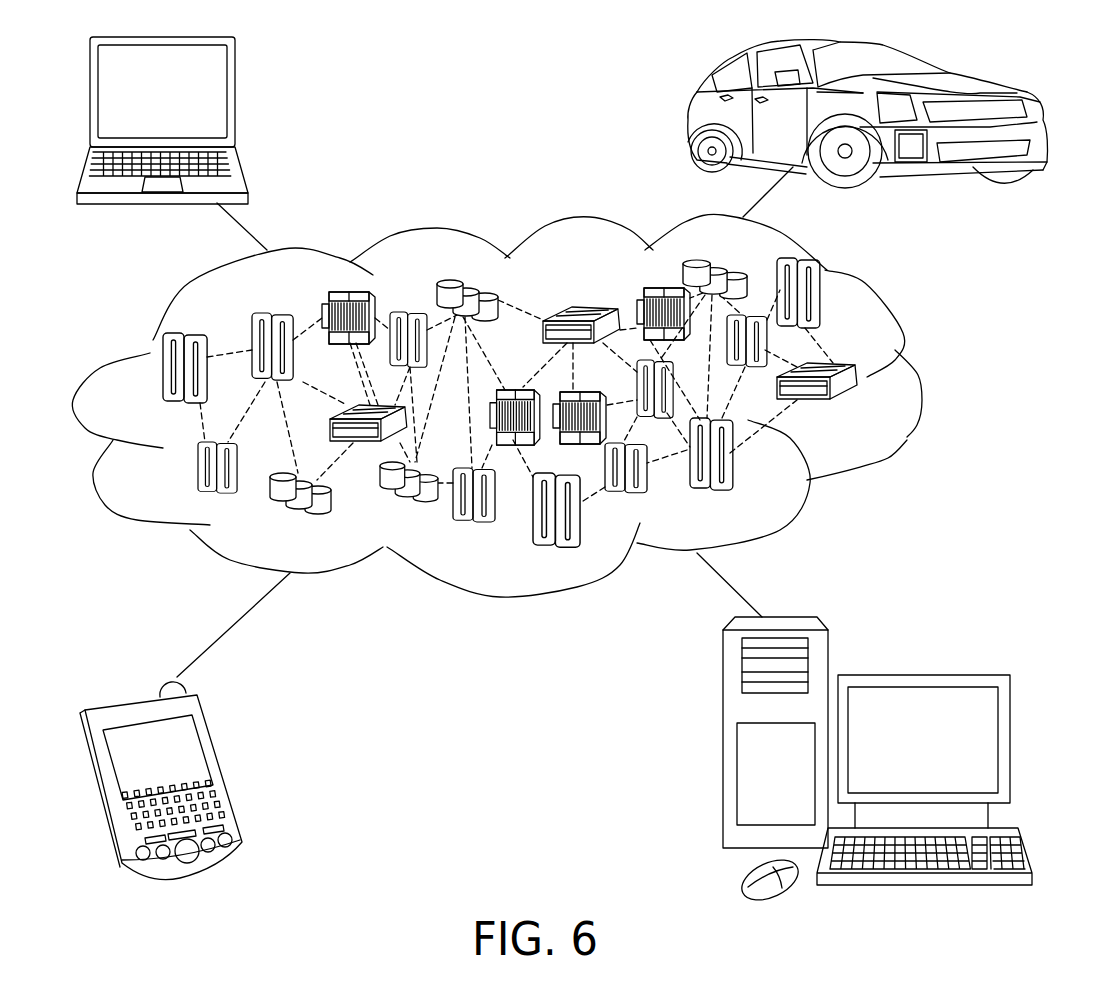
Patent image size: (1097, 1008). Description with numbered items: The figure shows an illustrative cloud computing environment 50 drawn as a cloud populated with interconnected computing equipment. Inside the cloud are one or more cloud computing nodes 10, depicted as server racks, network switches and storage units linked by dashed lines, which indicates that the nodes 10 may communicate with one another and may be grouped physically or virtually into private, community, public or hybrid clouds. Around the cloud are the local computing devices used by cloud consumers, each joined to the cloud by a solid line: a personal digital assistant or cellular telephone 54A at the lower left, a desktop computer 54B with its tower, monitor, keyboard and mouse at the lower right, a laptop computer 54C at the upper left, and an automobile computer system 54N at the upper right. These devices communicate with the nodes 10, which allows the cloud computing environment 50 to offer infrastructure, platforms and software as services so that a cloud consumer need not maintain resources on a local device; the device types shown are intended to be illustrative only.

The cloud computing nodes 10 is at (868, 413).
The cloud computing environment 50 is at (920, 378).
The personal digital assistant (PDA) or cellular telephone 54A is at (225, 770).
The desktop computer 54B is at (920, 673).
The laptop computer 54C is at (238, 98).
The automobile computer system 54N is at (692, 117).